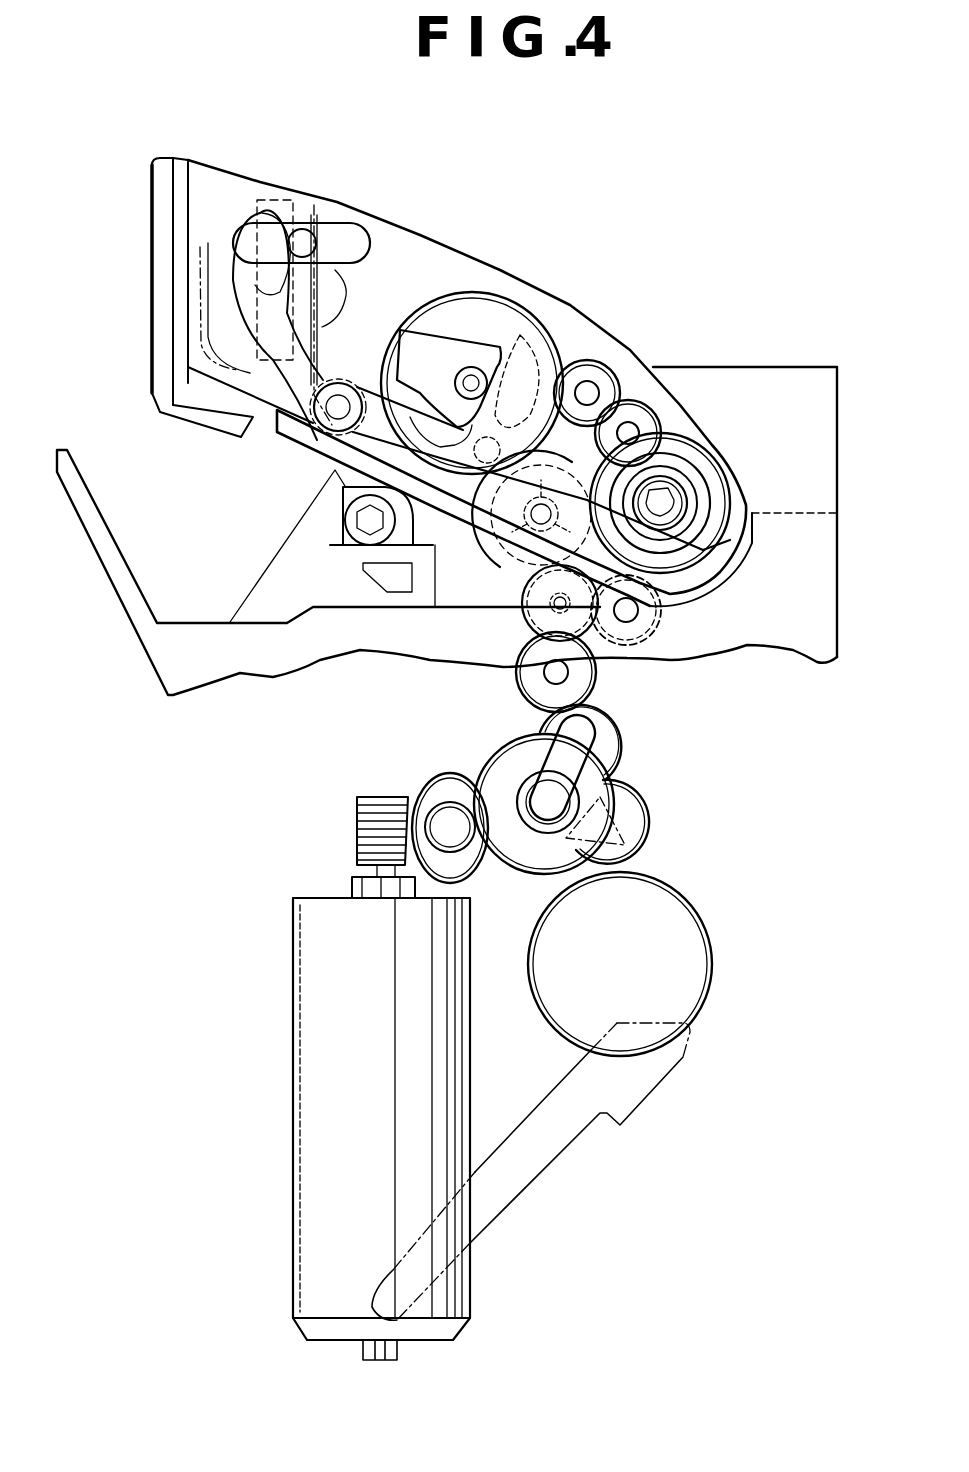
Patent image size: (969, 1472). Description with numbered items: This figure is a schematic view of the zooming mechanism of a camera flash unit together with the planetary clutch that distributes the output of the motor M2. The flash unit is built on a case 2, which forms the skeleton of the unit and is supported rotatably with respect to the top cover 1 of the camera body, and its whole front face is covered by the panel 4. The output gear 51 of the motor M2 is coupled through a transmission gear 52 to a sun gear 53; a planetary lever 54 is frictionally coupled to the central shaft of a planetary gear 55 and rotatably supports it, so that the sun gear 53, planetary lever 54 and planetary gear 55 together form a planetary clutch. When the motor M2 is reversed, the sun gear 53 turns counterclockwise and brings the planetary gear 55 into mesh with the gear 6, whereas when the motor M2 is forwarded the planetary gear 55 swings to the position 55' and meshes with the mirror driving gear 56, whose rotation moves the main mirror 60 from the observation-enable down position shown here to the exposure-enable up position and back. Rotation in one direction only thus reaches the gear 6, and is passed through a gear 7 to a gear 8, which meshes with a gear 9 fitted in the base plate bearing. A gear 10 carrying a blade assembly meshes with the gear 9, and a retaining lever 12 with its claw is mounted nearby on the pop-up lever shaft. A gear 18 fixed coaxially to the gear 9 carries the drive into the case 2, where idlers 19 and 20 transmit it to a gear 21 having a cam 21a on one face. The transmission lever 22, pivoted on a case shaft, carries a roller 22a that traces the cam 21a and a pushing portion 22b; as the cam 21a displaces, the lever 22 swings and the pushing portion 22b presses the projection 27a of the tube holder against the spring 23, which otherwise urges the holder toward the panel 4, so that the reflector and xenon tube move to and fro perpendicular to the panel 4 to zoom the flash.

The top cover 1 is at (827, 457).
The case 2 is at (500, 290).
The panel 4 is at (162, 288).
The gear 6 is at (573, 677).
The gear 7 is at (520, 628).
The gear 8 is at (650, 617).
The gear 9 is at (703, 463).
The gear 10 is at (497, 537).
The retaining lever 12 is at (340, 517).
The gear 18 is at (667, 467).
The idler 19 is at (628, 417).
The idler 20 is at (583, 370).
The gear 21 is at (510, 323).
The cam 21a is at (460, 347).
The transmission lever 22 is at (285, 385).
The roller 22a is at (450, 420).
The pushing portion 22b is at (290, 218).
The spring 23 is at (322, 327).
The projection 27a is at (325, 220).
The output gear 51 is at (372, 837).
The transmission gear 52 is at (462, 787).
The sun gear 53 is at (520, 743).
The planetary lever 54 is at (580, 757).
The planetary gear 55 is at (629, 742).
The planetary gear position 55' is at (662, 827).
The mirror driving gear 56 is at (680, 973).
The main mirror 60 is at (536, 1165).
The motor M2 is at (317, 1100).